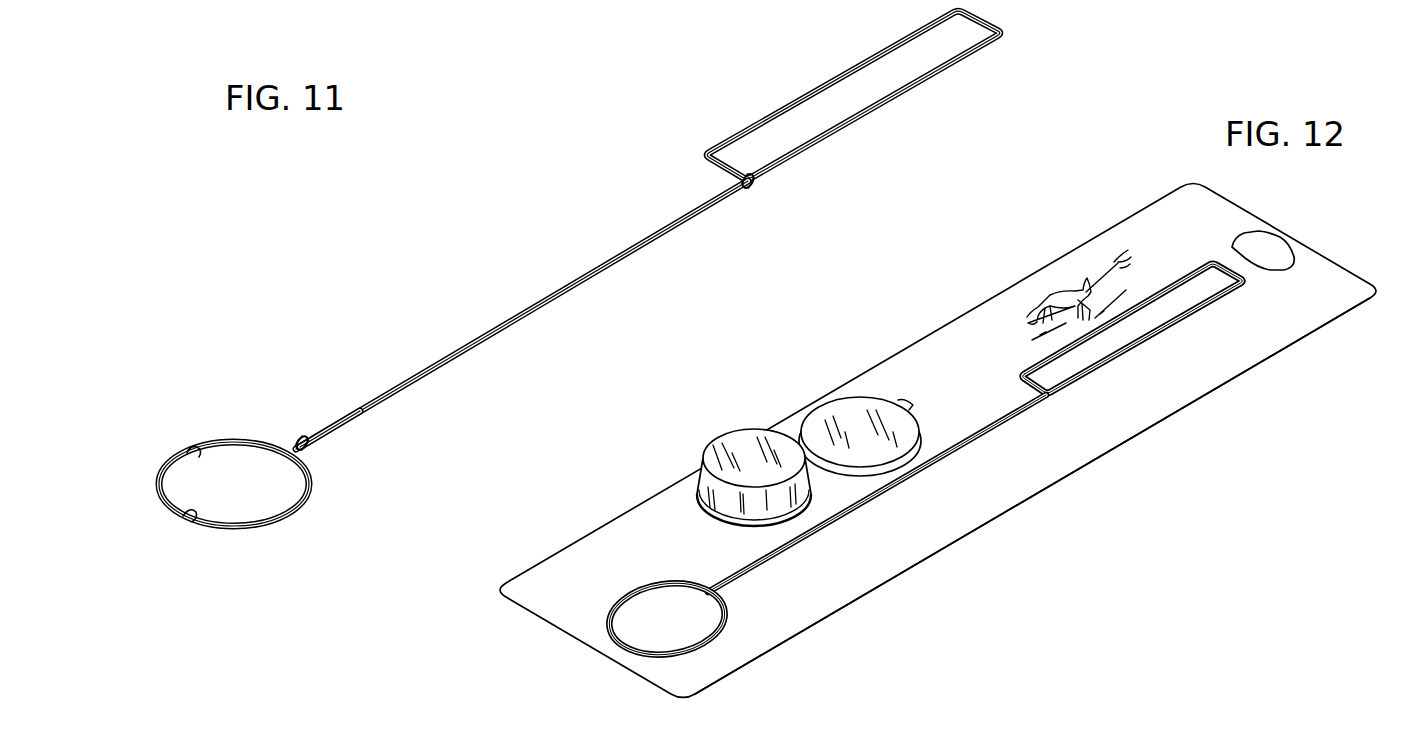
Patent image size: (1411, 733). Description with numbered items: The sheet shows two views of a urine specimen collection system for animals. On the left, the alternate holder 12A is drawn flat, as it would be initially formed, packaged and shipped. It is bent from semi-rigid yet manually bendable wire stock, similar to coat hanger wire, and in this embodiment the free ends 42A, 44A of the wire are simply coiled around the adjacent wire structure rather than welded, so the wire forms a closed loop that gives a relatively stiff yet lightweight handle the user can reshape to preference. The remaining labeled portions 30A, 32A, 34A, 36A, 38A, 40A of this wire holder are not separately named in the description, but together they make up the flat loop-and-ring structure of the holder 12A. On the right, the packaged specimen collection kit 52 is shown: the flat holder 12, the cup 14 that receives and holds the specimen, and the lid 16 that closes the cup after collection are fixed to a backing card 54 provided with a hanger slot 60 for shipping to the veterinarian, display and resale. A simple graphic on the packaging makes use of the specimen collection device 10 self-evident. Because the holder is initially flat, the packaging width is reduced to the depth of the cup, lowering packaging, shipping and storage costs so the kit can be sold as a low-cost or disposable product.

In FIG. 12, the specimen collection device 10 is at (944, 440).
In FIG. 12, the holder 12 is at (1017, 420).
In FIG. 12, the cup 14 is at (700, 520).
In FIG. 12, the lid 16 is at (913, 421).
In FIG. 12, the specimen collection kit 52 is at (1223, 358).
In FIG. 12, the backing card 54 is at (876, 585).
In FIG. 12, the hanger slot 60 is at (1290, 247).
In FIG. 11, the alternate holder 12A is at (565, 296).
In FIG. 11, the wire handle 30A is at (536, 313).
In FIG. 11, the rectangular frame loop 32A is at (898, 103).
In FIG. 11, the handle second end 34A is at (334, 420).
In FIG. 11, the ring 36A is at (310, 497).
In FIG. 11, the ring attachment point 38A is at (200, 448).
In FIG. 11, the ring attachment point 40A is at (190, 516).
In FIG. 11, the free end 42A is at (310, 449).
In FIG. 11, the free end 44A is at (758, 186).